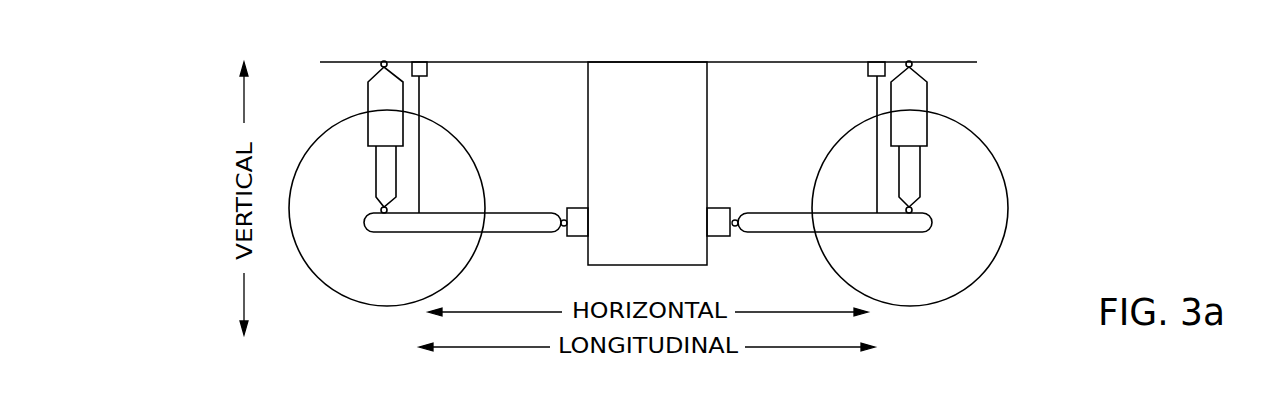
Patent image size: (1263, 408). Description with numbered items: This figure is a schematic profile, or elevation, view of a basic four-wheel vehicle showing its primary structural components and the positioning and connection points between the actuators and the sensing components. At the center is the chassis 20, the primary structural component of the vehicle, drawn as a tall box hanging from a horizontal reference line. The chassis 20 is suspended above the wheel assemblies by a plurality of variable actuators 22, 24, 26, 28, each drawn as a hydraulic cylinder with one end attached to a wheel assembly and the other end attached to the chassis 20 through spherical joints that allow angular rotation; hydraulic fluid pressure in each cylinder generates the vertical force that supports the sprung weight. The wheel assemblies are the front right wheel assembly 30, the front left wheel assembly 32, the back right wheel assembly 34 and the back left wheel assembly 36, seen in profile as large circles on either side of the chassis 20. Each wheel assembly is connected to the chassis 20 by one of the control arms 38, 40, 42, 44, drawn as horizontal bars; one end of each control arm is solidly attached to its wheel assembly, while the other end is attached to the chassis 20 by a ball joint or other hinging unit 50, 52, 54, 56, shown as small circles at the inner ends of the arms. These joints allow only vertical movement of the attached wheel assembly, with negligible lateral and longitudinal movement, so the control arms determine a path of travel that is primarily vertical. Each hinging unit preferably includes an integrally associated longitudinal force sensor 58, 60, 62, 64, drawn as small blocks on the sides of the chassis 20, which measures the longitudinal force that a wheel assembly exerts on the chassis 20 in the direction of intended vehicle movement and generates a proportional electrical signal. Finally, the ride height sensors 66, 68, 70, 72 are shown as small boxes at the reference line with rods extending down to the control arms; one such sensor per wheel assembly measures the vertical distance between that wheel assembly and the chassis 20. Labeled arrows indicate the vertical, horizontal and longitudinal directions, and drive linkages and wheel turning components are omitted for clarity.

The chassis 20 is at (647, 78).
The variable actuator 22 is at (948, 137).
The variable actuator 24 is at (916, 97).
The variable actuator 26 is at (339, 137).
The variable actuator 28 is at (375, 100).
The FR (Front Right) wheel assembly 30 is at (945, 208).
The FL (Front Left) wheel assembly 32 is at (987, 205).
The BR (Back Right) wheel assembly 34 is at (387, 230).
The BL (Back Left) wheel assembly 36 is at (360, 285).
The control arm 38 is at (835, 247).
The control arm 40 is at (782, 223).
The control arm 42 is at (462, 248).
The control arm 44 is at (517, 223).
The ball joint or hinging unit 50 is at (749, 187).
The ball joint or hinging unit 52 is at (738, 215).
The ball joint or hinging unit 54 is at (544, 188).
The ball joint or hinging unit 56 is at (563, 215).
The longitudinal force sensor 58 is at (676, 231).
The longitudinal force sensor 60 is at (720, 223).
The longitudinal force sensor 62 is at (619, 211).
The longitudinal force sensor 64 is at (590, 215).
The ride height sensor 66 is at (833, 137).
The ride height sensor 68 is at (868, 70).
The ride height sensor 70 is at (465, 137).
The ride height sensor 72 is at (427, 70).